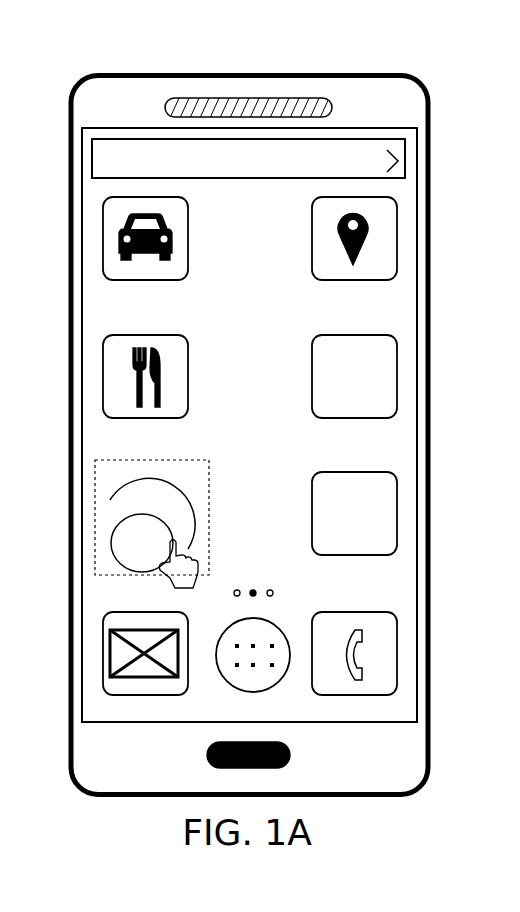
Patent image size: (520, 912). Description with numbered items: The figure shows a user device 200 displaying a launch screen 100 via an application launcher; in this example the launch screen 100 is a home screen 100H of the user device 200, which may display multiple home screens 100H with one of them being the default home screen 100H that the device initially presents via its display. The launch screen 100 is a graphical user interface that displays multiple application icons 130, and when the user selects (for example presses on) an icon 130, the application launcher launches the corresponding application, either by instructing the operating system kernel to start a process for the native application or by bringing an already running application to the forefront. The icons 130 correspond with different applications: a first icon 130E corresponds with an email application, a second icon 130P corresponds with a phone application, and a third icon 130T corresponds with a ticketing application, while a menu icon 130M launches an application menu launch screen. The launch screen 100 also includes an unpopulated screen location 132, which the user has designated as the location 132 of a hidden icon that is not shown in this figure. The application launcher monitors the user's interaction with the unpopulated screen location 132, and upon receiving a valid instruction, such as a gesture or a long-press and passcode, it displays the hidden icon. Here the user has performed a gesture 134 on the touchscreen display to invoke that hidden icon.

The user device 200 is at (430, 97).
The launch screen 100 is at (249, 425).
The home screen 100H is at (274, 333).
The application icons 130 is at (101, 196).
The third icon 130T is at (399, 471).
The unpopulated screen location 132 is at (94, 491).
The gesture 134 is at (109, 532).
The first icon 130E is at (101, 611).
The menu icon 130M is at (229, 622).
The second icon 130P is at (399, 611).